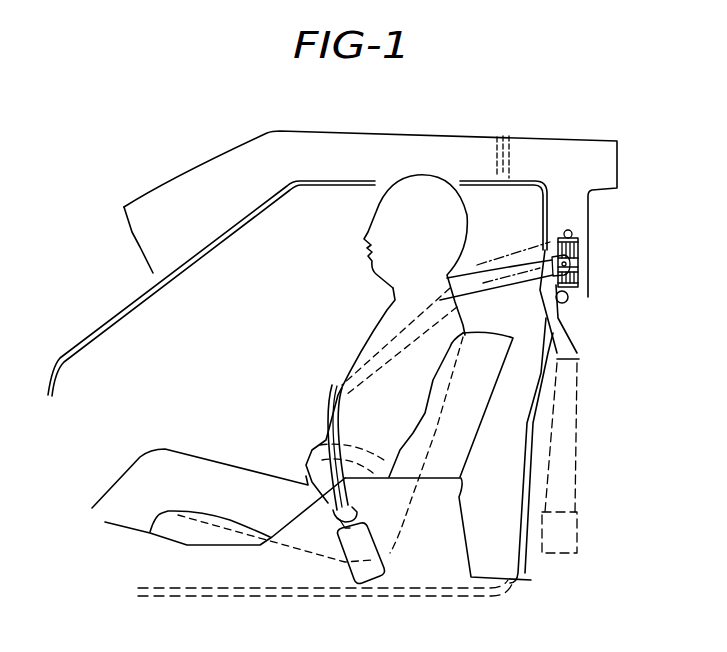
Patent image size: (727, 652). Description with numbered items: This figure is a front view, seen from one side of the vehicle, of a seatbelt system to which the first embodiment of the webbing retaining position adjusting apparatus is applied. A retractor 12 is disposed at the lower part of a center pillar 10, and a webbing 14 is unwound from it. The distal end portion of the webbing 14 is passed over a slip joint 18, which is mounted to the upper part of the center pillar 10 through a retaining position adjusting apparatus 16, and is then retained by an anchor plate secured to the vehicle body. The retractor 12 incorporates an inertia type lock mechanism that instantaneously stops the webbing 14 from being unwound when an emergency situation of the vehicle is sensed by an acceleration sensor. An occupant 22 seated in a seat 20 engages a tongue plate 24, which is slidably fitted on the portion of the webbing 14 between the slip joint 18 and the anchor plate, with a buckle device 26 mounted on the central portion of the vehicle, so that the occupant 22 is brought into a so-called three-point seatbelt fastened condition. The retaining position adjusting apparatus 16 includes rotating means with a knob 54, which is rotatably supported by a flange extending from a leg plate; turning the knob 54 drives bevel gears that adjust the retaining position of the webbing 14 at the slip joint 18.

The center pillar 10 is at (577, 210).
The retractor 12 is at (579, 530).
The webbing 14 is at (325, 418).
The retaining position adjusting apparatus 16 is at (597, 273).
The slip joint 18 is at (577, 265).
The seat 20 is at (481, 428).
The occupant 22 is at (368, 278).
The tongue plate 24 is at (364, 510).
The buckle device 26 is at (384, 563).
The knob 54 is at (567, 300).